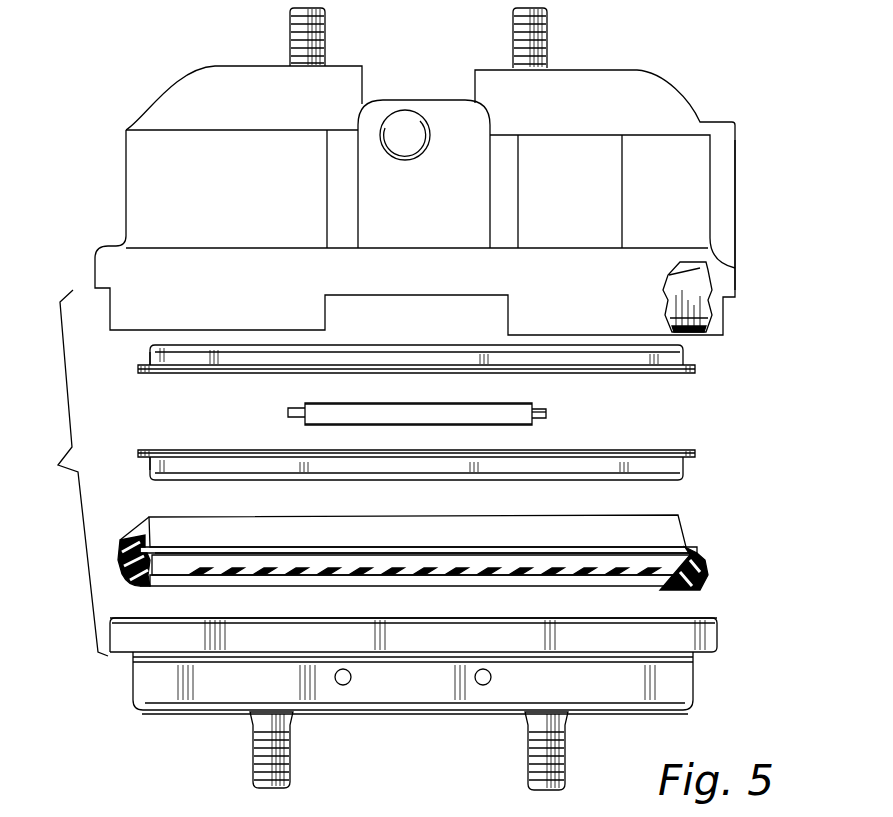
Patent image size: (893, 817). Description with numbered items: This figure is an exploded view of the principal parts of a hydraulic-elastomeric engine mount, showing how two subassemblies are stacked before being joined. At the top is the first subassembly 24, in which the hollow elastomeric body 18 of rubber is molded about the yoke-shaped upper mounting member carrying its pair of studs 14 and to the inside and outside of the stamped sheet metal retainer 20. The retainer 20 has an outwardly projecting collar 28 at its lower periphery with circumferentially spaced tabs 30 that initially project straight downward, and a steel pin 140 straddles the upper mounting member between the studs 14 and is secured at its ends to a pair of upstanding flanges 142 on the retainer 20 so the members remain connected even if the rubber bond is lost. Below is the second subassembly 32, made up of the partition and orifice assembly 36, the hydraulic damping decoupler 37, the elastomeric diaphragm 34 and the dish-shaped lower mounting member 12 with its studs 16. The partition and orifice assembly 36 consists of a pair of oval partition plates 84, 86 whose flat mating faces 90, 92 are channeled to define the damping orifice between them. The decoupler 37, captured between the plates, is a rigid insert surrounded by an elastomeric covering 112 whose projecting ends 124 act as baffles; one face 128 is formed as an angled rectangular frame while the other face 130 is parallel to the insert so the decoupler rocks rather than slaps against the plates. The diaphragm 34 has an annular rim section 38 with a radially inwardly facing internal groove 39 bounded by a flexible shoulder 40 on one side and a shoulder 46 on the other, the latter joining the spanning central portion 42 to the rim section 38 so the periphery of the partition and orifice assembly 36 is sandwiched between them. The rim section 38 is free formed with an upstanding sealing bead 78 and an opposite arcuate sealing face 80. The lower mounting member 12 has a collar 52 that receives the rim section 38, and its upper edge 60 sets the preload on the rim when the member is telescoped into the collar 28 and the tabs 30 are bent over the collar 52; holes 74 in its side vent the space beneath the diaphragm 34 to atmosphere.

The mounting member 12 is at (680, 690).
The studs 14 is at (325, 38).
The studs 16 is at (290, 762).
The elastomeric body 18 is at (675, 92).
The retainer 20 is at (690, 276).
The subassembly 24 is at (740, 172).
The collar 28 is at (695, 282).
The tabs 30 is at (704, 318).
The subassembly 32 is at (118, 512).
The elastomeric diaphragm 34 is at (688, 520).
The partition and orifice assembly 36 is at (700, 435).
The hydraulic damping decoupler 37 is at (548, 411).
The rim section 38 is at (705, 555).
The internal groove 39 is at (565, 556).
The shoulder 40 is at (692, 546).
The central portion 42 is at (460, 577).
The shoulder 46 is at (706, 572).
The collar 52 is at (717, 641).
The upper edge 60 is at (705, 620).
The holes 74 is at (352, 677).
The sealing bead 78 is at (147, 518).
The sealing face 80 is at (140, 565).
The partition plate 84 is at (683, 357).
The partition plate 86 is at (680, 472).
The mating face 90 is at (150, 370).
The mating face 92 is at (155, 450).
The elastomeric covering 112 is at (395, 412).
The projecting ends 124 is at (288, 410).
The face 128 is at (500, 403).
The face 130 is at (320, 425).
The steel pin 140 is at (405, 122).
The flanges 142 is at (445, 100).